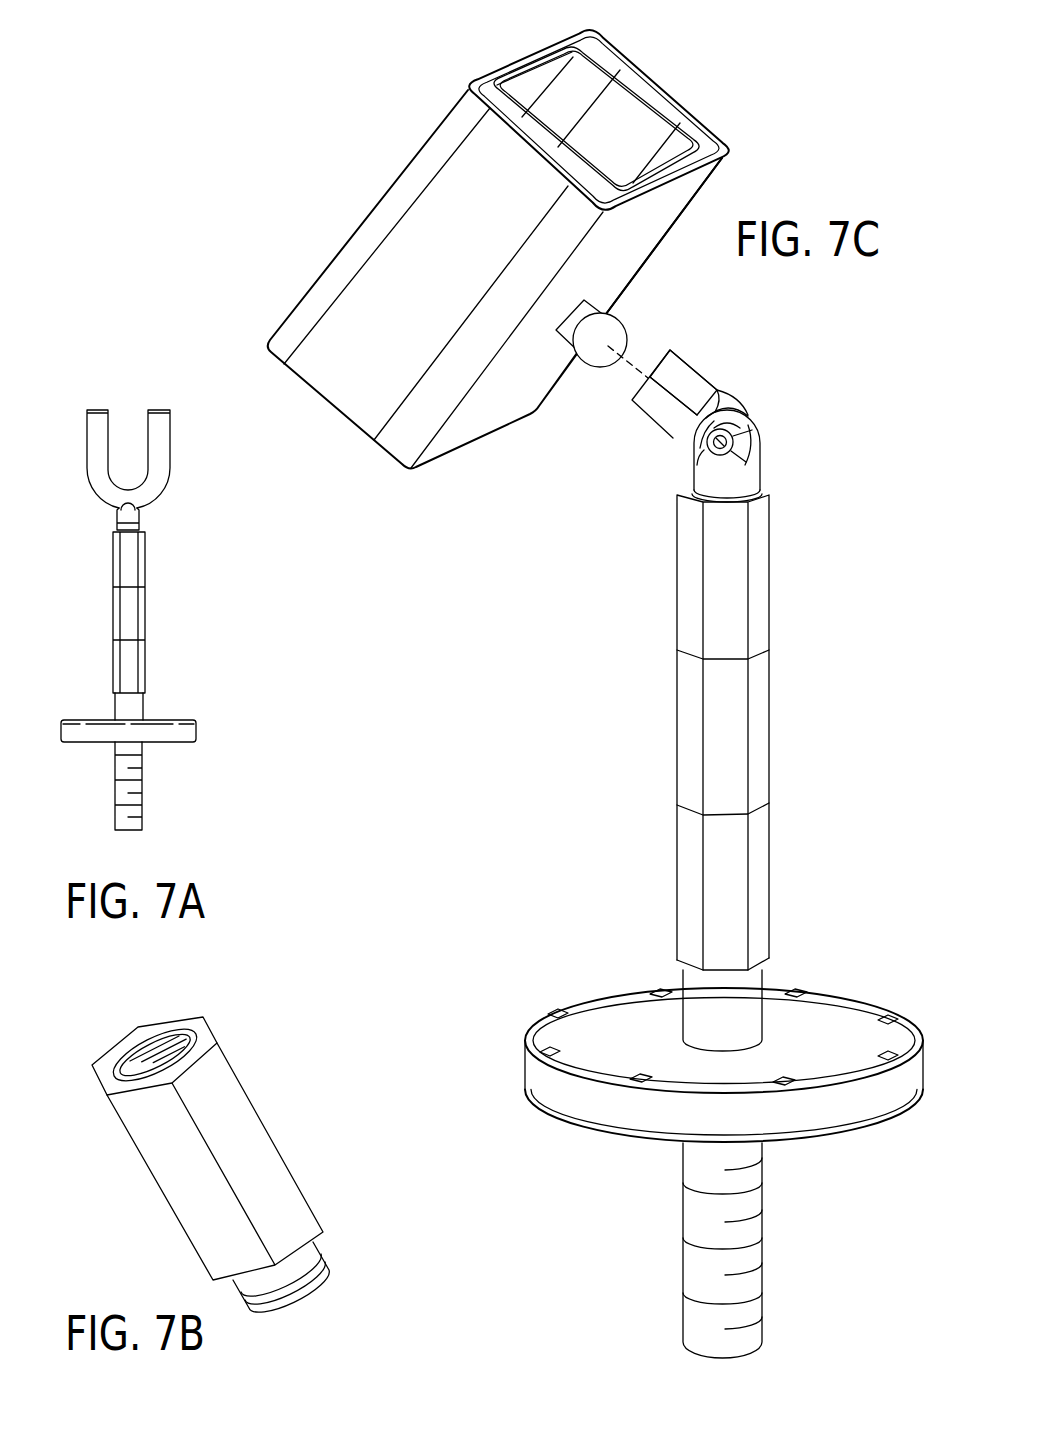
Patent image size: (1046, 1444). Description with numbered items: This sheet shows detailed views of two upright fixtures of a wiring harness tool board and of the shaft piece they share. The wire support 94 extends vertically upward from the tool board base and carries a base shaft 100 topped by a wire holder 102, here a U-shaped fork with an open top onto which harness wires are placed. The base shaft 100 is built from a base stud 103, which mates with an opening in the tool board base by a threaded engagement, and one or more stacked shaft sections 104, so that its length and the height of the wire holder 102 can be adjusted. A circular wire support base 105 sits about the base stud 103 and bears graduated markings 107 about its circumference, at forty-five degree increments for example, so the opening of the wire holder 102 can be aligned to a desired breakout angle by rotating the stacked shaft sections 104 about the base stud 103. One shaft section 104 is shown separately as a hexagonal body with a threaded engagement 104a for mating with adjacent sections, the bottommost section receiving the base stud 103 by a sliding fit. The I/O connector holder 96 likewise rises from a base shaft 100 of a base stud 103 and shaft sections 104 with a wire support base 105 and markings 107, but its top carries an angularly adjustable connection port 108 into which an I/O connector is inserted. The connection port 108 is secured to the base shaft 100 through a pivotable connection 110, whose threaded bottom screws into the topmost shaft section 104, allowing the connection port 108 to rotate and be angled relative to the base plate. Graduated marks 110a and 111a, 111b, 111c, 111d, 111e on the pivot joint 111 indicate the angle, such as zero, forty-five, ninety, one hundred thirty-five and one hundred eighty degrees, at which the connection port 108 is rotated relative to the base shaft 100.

In FIG. 7A, the wire support 94 is at (139, 620).
In FIG. 7C, the I/O connector holder 96 is at (661, 773).
In FIG. 7C, the base shaft 100 is at (694, 926).
In FIG. 7A, the base shaft 100 is at (134, 681).
In FIG. 7A, the wire holder 102 is at (170, 448).
In FIG. 7C, the base stud 103 is at (683, 1255).
In FIG. 7A, the base stud 103 is at (142, 785).
In FIG. 7C, the shaft section 104 is at (710, 852).
In FIG. 7A, the shaft section 104 is at (128, 605).
In FIG. 7B, the shaft section 104 is at (258, 1167).
In FIG. 7B, the threaded engagement 104a is at (330, 1280).
In FIG. 7C, the wire support base 105 is at (694, 1063).
In FIG. 7A, the wire support base 105 is at (85, 745).
In FIG. 7C, the graduated markings 107 is at (550, 1048).
In FIG. 7C, the angularly adjustable connection port 108 is at (362, 212).
In FIG. 7C, the pivotable connection 110 is at (652, 369).
In FIG. 7C, the graduated mark 110a is at (686, 369).
In FIG. 7C, the pivot joint 111 is at (723, 406).
In FIG. 7C, the graduated mark 111a is at (697, 453).
In FIG. 7C, the graduated mark 111b is at (697, 430).
In FIG. 7C, the graduated mark 111c is at (742, 417).
In FIG. 7C, the graduated mark 111d is at (754, 432).
In FIG. 7C, the graduated mark 111e is at (757, 460).